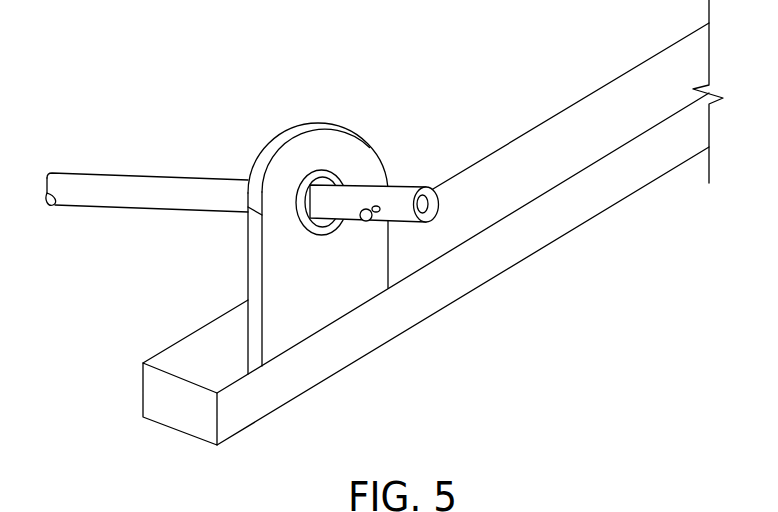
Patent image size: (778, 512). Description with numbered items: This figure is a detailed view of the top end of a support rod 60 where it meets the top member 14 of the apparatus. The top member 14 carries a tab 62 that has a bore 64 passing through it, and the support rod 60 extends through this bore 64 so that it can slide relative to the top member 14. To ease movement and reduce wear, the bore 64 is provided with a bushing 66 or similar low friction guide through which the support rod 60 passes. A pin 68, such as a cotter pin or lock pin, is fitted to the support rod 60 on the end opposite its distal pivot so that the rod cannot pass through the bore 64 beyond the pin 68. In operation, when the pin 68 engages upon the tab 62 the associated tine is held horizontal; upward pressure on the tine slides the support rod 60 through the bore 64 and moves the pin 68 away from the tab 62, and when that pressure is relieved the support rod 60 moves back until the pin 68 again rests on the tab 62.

The top member 14 is at (558, 218).
The support rod 60 is at (153, 175).
The tab 62 is at (352, 128).
The bore 64 is at (335, 172).
The bushing 66 is at (322, 171).
The pin 68 is at (404, 184).